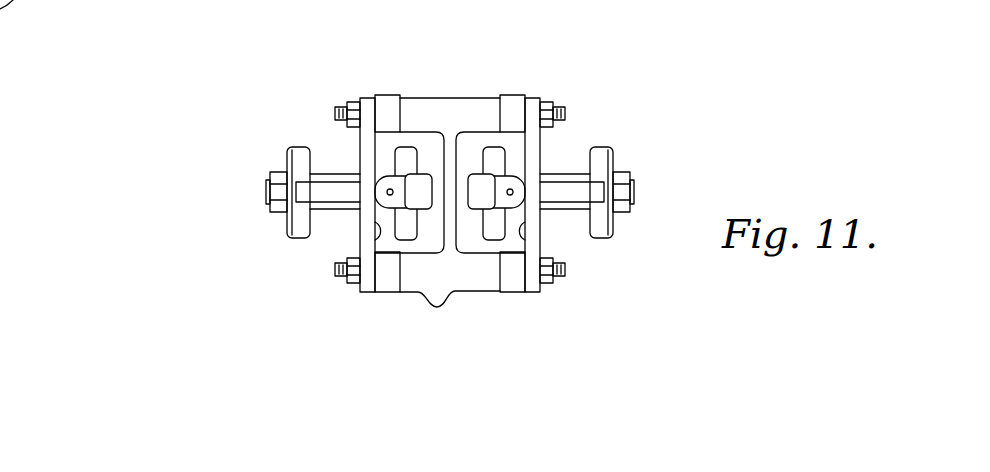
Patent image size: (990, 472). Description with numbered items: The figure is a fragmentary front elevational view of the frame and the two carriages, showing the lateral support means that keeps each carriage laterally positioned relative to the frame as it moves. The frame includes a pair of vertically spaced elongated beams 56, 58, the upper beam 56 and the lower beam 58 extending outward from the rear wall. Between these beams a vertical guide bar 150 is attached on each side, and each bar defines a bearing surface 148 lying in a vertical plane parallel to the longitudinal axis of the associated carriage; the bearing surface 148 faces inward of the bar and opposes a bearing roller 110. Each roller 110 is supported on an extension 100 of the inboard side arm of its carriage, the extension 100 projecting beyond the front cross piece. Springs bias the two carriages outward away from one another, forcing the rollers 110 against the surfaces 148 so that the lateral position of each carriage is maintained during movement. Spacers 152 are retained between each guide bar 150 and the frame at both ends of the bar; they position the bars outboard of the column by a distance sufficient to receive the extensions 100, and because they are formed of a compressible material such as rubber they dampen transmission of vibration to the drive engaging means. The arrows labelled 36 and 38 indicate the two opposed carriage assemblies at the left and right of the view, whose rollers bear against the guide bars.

The axle assembly (right) 36 is at (612, 138).
The axle assembly (left) 38 is at (290, 138).
The upper beam 56 is at (475, 105).
The lower beam 58 is at (450, 292).
The extension 100 is at (476, 182).
The bearing roller 110 is at (377, 176).
The bearing surface 148 is at (369, 219).
The vertical guide bar 150 is at (364, 281).
The spacer 152 is at (387, 102).